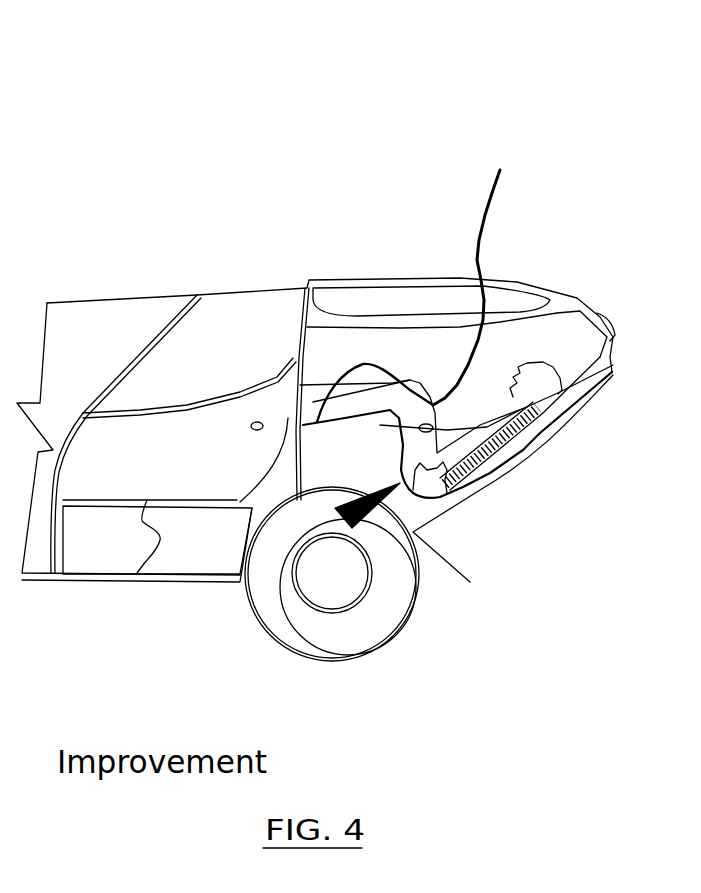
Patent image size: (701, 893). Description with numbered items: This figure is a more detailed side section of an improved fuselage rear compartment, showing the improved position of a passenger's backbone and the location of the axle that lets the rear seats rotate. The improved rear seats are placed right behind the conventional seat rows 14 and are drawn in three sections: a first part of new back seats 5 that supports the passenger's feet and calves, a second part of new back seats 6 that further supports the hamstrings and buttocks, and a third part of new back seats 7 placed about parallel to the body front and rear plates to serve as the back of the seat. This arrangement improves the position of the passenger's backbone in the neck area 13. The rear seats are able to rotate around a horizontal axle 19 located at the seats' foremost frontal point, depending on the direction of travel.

The horizontal axle 19 is at (431, 247).
The third part of new back seats 7 is at (448, 407).
The first part of new back seats 5 is at (569, 199).
The backbone in the neck area 13 is at (598, 437).
The second part of new back seats 6 is at (451, 572).
The conventional seat rows 14 is at (333, 691).